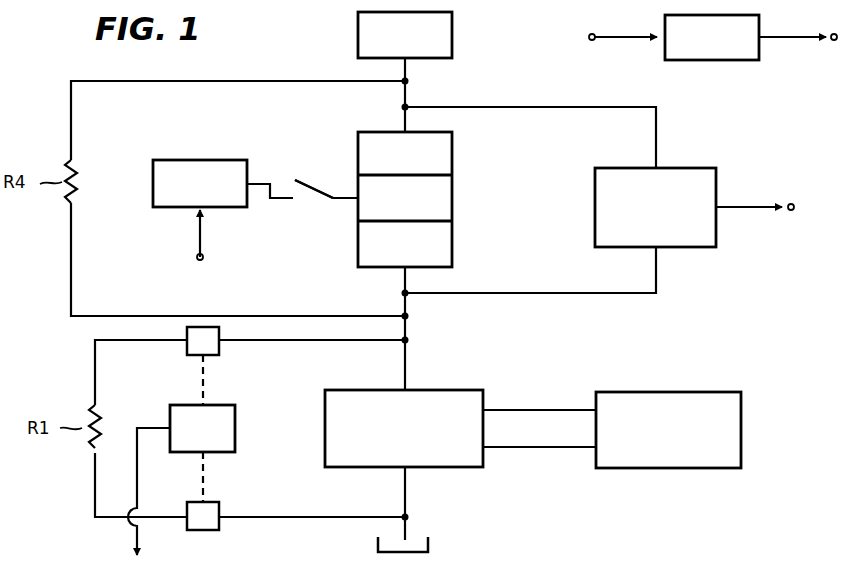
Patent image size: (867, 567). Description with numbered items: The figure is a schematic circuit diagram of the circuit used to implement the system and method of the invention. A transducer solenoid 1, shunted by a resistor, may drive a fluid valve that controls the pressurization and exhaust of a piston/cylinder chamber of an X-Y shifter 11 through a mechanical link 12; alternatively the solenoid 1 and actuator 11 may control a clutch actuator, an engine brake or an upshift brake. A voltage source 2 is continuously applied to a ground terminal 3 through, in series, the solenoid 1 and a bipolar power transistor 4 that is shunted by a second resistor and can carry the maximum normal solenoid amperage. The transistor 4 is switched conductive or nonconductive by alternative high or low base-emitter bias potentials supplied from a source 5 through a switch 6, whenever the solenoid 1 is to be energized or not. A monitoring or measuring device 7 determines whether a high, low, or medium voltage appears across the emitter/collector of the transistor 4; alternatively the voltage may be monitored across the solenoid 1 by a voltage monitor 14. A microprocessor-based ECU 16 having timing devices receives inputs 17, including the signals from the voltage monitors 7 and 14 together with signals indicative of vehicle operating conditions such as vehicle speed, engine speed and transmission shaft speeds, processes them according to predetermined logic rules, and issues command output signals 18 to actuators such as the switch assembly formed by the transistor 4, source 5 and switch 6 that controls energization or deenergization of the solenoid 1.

The transducer solenoid 1 is at (447, 390).
The voltage source 2 is at (452, 36).
The ground terminal 3 is at (415, 540).
The bipolar power transistor 4 is at (338, 266).
The source 5 is at (200, 160).
The switch 6 is at (300, 214).
The voltage monitor 7 is at (688, 247).
The X-Y shifter 11 is at (683, 392).
The mechanical link 12 is at (532, 410).
The voltage monitor 14 is at (225, 405).
The ECU 16 is at (712, 60).
The inputs 17 is at (630, 40).
The command output signals 18 is at (790, 40).